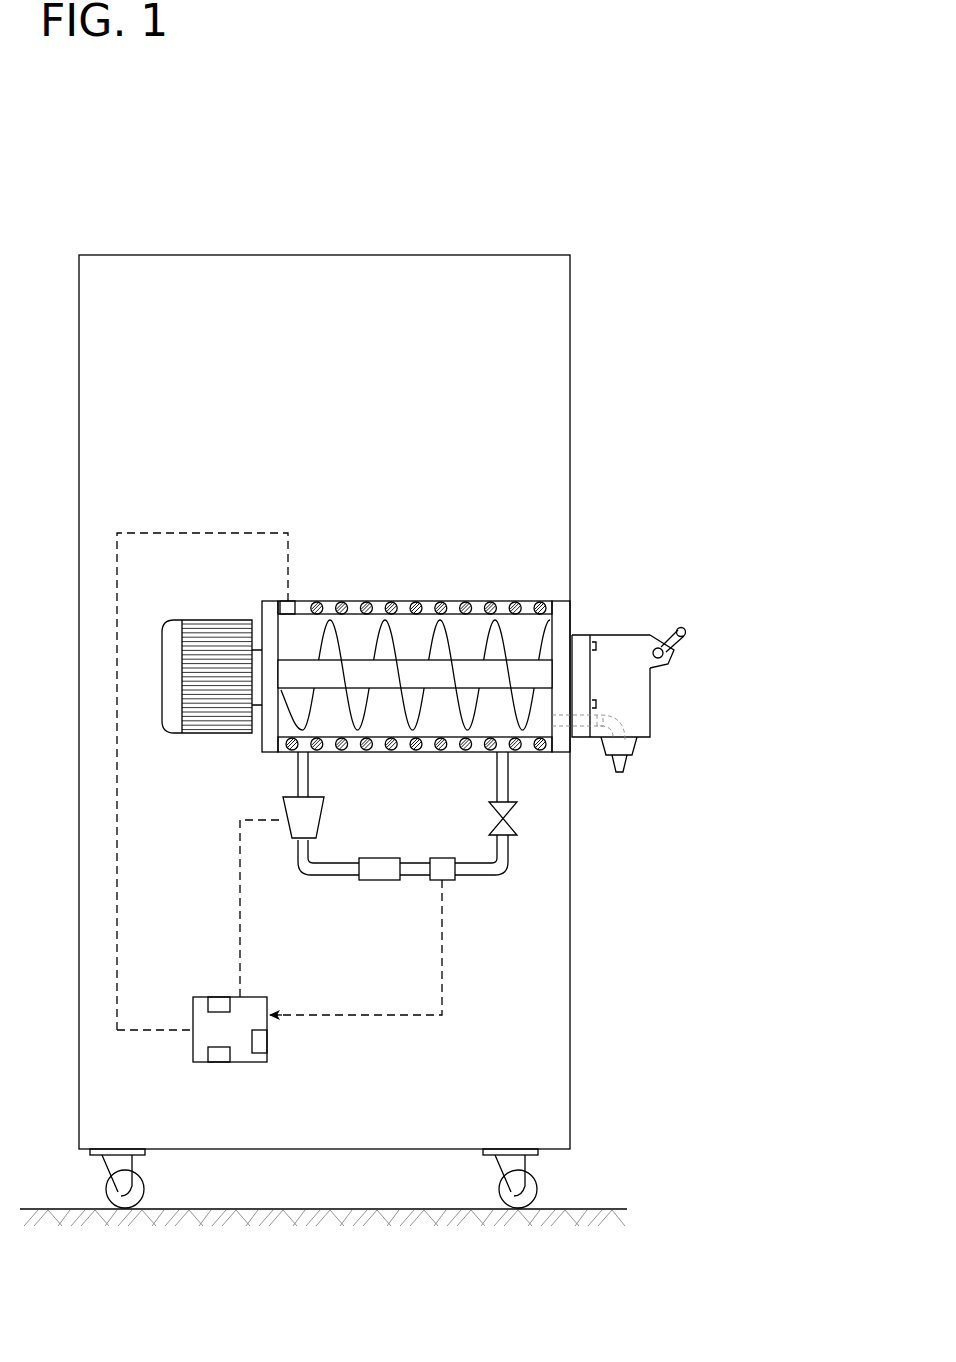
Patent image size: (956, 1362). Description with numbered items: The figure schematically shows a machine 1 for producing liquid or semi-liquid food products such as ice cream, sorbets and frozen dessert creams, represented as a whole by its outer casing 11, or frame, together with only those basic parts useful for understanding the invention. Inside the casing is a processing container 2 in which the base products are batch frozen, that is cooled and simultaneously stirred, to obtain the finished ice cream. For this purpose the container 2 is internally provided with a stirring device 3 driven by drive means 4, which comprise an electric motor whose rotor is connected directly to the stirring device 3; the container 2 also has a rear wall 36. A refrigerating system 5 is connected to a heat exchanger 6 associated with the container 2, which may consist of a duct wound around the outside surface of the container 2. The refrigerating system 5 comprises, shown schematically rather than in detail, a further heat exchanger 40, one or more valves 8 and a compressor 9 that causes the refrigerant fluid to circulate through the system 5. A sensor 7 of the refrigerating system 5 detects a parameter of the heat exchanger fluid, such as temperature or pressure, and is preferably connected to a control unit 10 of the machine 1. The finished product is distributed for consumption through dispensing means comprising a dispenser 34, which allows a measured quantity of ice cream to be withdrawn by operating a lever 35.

The machine 1 is at (552, 203).
The container 2 is at (453, 600).
The stirring device 3 is at (362, 668).
The drive means 4 is at (200, 643).
The refrigerating system 5 is at (532, 891).
The heat exchanger 6 is at (540, 752).
The sensor 7 is at (447, 883).
The valve 8 is at (520, 828).
The compressor 9 is at (280, 808).
The control unit 10 is at (238, 1048).
The outer casing 11 is at (570, 343).
The dispenser 34 is at (640, 690).
The lever 35 is at (670, 633).
The rear wall 36 is at (270, 738).
The further heat exchanger 40 is at (372, 884).